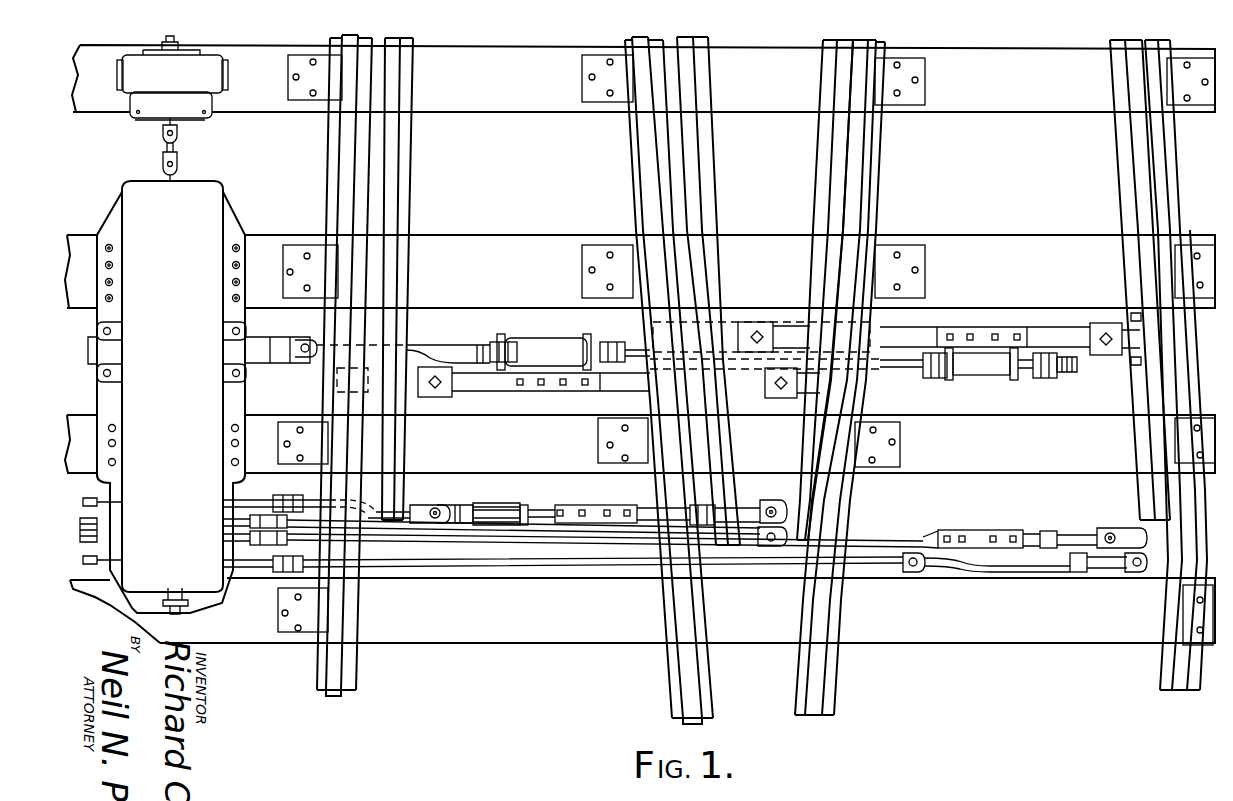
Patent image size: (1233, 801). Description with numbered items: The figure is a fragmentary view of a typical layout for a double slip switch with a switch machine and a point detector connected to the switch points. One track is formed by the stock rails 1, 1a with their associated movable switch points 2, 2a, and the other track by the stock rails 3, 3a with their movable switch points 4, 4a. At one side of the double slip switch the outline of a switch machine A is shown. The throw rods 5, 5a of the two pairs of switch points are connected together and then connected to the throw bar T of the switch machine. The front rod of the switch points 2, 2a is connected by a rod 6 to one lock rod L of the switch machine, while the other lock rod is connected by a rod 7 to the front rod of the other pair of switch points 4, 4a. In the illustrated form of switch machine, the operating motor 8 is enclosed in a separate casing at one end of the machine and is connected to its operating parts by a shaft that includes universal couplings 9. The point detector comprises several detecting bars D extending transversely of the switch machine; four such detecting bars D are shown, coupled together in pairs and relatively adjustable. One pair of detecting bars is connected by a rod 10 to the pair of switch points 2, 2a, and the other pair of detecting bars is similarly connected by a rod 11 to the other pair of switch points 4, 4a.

The stock rail 1 is at (342, 152).
The movable switch point 2 is at (393, 155).
The stock rail 3 is at (648, 152).
The movable switch point 4 is at (693, 157).
The stock rail 1a is at (862, 157).
The movable switch point 2a is at (840, 152).
The stock rail 3a is at (1162, 158).
The movable switch point 4a is at (1138, 157).
The throw rod 5 is at (478, 350).
The throw rod 5a is at (880, 360).
The rod 6 is at (378, 512).
The rod 7 is at (415, 563).
The operating motor 8 is at (172, 78).
The universal couplings 9 is at (176, 167).
The rod 10 is at (533, 530).
The rod 11 is at (543, 543).
The switch machine A is at (167, 397).
The throw bar T is at (278, 355).
The detecting bars D is at (80, 540).
The lock rod L is at (83, 498).